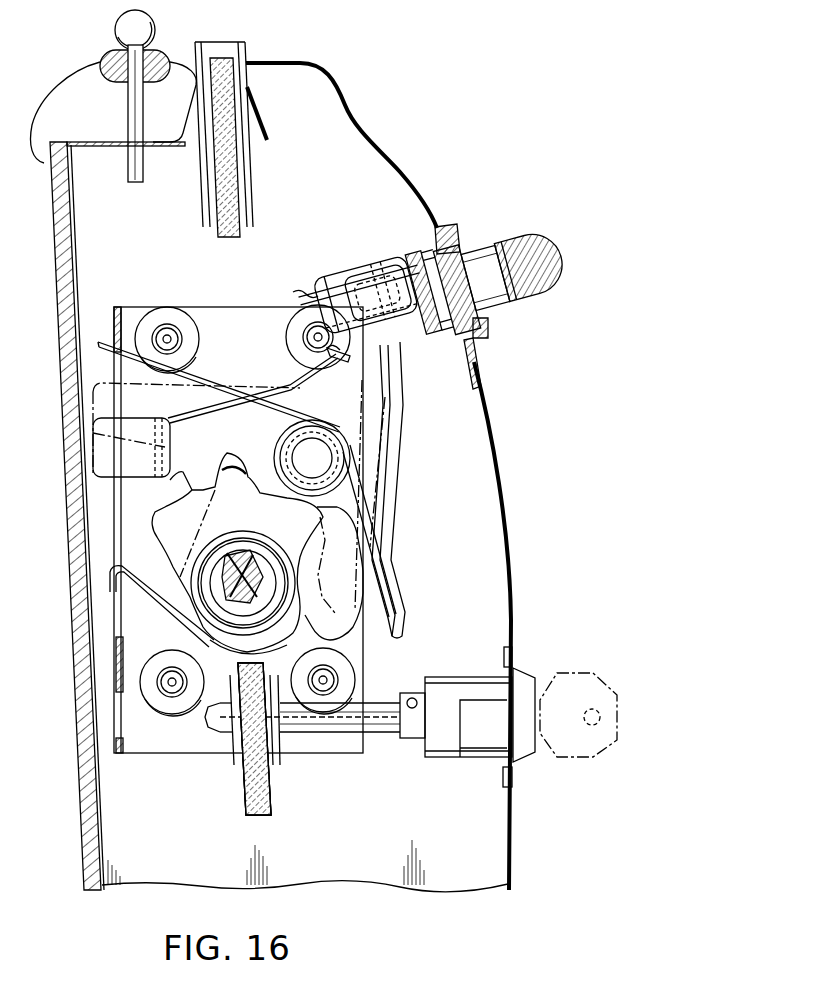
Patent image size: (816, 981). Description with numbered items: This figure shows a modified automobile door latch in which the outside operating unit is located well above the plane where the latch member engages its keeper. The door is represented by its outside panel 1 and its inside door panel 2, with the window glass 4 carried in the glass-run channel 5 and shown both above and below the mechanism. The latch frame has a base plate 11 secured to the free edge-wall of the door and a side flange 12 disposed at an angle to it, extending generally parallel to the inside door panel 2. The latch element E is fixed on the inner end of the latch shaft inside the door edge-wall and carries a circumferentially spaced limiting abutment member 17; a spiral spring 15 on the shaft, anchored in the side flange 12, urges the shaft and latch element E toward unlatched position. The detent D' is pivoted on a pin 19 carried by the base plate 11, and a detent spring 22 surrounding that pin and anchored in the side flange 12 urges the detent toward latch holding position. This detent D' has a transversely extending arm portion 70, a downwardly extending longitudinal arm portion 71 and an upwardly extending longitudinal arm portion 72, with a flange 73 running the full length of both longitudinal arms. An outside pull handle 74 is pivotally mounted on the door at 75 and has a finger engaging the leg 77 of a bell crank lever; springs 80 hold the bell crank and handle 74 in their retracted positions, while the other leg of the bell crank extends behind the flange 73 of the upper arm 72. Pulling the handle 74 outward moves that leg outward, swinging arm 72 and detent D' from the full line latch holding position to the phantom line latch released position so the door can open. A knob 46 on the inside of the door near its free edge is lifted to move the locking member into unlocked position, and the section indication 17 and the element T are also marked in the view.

The outside panel 1 is at (511, 597).
The inside door panel 2 is at (100, 777).
The window glass 4 is at (218, 170).
The glass-run channel 5 is at (202, 197).
The base plate 11 is at (360, 747).
The side flange 12 is at (112, 642).
The spiral spring 15 is at (150, 590).
The limiting abutment member 17 is at (297, 297).
The pin 19 is at (327, 443).
The detent spring 22 is at (236, 380).
The knob 46 is at (120, 23).
The transversely extending arm portion 70 is at (183, 420).
The downwardly extending longitudinal arm portion 71 is at (347, 595).
The upwardly extending longitudinal arm portion 72 is at (340, 263).
The flange 73 is at (385, 532).
The outside pull handle 74 is at (560, 276).
The pivot mounting 75 is at (453, 338).
The leg 77 is at (377, 297).
The springs 80 is at (303, 297).
The lever T is at (365, 415).
The detent D' is at (225, 552).
The latch element E is at (167, 547).